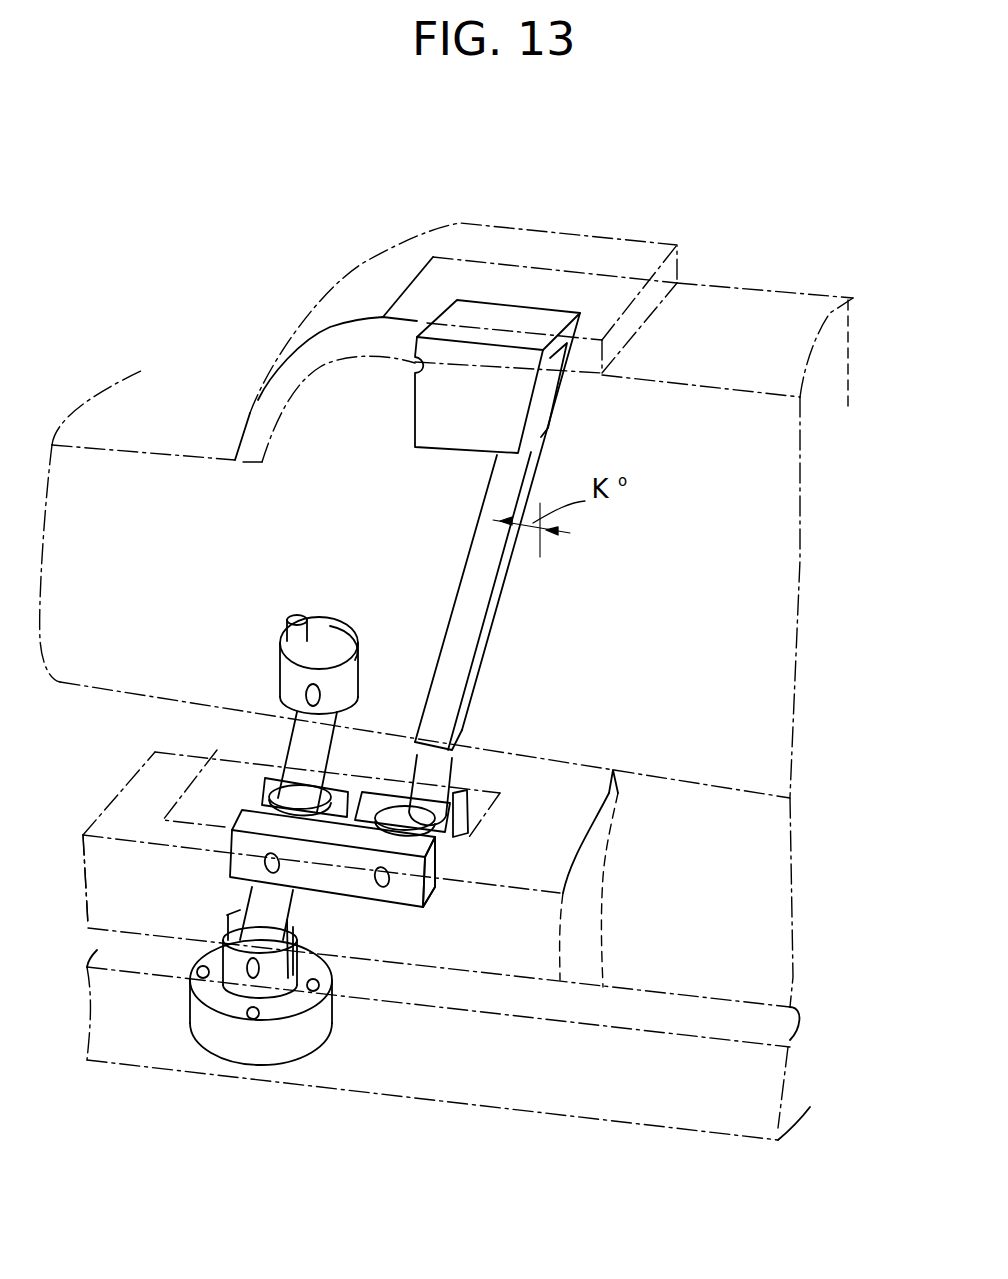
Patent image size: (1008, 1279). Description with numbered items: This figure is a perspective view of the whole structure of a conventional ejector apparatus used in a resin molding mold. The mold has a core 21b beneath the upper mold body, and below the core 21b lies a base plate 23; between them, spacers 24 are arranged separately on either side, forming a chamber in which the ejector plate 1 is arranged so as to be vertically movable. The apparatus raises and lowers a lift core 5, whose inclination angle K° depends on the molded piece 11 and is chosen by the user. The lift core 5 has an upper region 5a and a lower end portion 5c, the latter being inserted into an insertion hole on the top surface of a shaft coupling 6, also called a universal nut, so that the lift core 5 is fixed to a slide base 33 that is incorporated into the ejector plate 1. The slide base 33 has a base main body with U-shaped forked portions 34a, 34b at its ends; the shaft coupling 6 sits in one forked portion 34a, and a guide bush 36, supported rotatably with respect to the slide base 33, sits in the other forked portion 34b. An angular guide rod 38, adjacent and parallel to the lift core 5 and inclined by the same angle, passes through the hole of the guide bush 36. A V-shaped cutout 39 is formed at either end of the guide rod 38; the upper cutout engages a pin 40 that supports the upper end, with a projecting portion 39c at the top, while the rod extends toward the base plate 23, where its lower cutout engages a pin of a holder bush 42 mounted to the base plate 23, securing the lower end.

The ejector plate 1 is at (103, 908).
The lift core 5 is at (470, 590).
The head block of arm 5a is at (505, 315).
The lower end portion of lift core 5c is at (447, 793).
The shaft coupling 6 is at (447, 870).
The molded piece 11 is at (573, 240).
The core 21b is at (813, 611).
The base plate 23 is at (797, 1073).
The spacers 24 is at (800, 870).
The slide base 33 is at (363, 888).
The forked portion 34a is at (465, 808).
The forked portion 34b is at (247, 808).
The guide bush 36 is at (273, 803).
The guide rod 38 is at (305, 745).
The V-shaped cutout 39 is at (272, 662).
The projection of cylinder 39c is at (296, 615).
The pin 40 is at (343, 640).
The holder bush 42 is at (190, 1034).